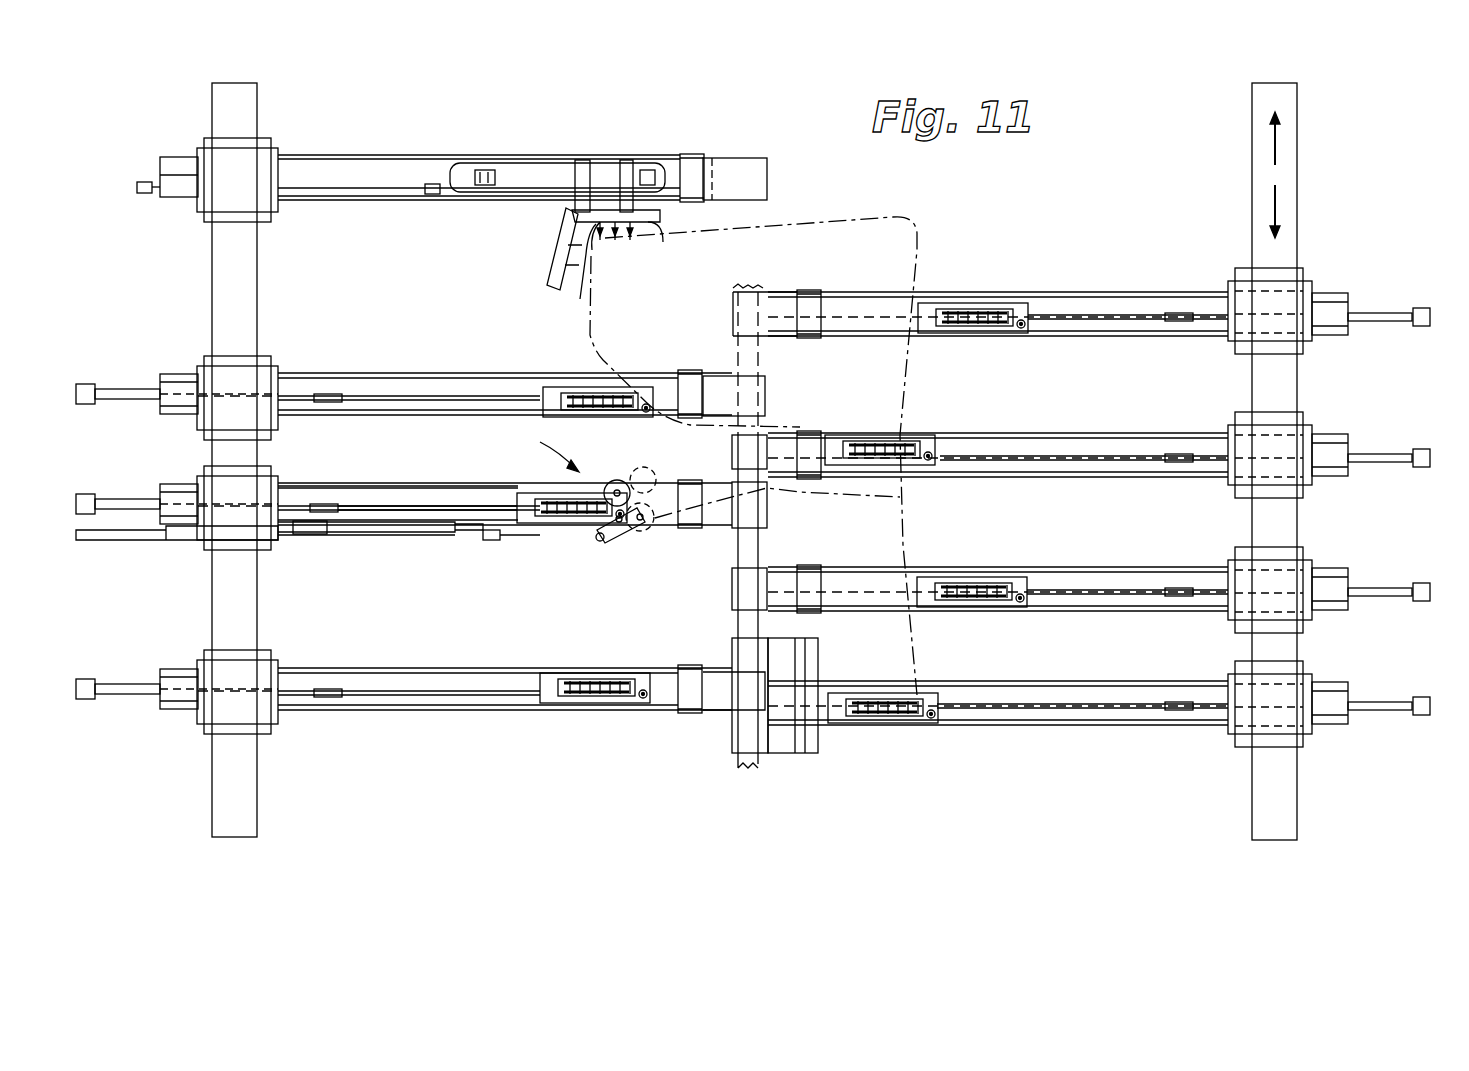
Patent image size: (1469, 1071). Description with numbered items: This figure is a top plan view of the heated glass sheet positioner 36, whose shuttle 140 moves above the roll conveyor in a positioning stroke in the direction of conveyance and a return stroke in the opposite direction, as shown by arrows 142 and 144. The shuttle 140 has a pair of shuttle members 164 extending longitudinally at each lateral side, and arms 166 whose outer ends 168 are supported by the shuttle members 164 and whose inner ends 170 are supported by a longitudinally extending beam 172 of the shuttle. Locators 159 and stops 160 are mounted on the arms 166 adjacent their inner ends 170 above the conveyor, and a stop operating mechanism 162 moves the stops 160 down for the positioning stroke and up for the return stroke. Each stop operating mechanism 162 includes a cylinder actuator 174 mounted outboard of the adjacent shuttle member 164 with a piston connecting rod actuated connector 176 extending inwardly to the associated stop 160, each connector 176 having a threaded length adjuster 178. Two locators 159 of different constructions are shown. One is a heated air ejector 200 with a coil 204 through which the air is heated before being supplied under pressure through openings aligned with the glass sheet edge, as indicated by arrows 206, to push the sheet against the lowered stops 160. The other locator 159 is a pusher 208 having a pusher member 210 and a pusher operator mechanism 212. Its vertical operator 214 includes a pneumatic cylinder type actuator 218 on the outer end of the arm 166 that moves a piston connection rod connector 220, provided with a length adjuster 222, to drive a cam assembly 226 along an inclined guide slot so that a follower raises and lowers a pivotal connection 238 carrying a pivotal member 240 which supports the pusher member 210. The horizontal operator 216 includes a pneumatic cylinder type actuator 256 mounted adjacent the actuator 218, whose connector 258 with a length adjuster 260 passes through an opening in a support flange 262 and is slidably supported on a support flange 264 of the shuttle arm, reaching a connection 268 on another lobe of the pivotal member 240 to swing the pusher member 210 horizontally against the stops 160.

The positioner 36 is at (1094, 211).
The shuttle 140 is at (1298, 168).
The arrow 142 is at (1292, 140).
The arrow 144 is at (1292, 197).
The locator 159 is at (553, 214).
The stop 160 is at (645, 415).
The stop operating mechanism 162 is at (547, 385).
The shuttle member 164 is at (212, 272).
The arm 166 is at (325, 198).
The outer end 168 is at (290, 548).
The inner end 170 is at (770, 336).
The beam 172 is at (763, 279).
The cylinder actuator 174 is at (126, 391).
The connector 176 is at (387, 375).
The length adjuster 178 is at (334, 403).
The heated air ejector 200 is at (352, 185).
The coil 204 is at (446, 165).
The arrows 206 is at (664, 237).
The pusher 208 is at (592, 546).
The pusher member 210 is at (643, 467).
The pusher operator mechanism 212 is at (440, 506).
The vertical operator 214 is at (418, 483).
The horizontal operator 216 is at (447, 545).
The pneumatic cylinder type actuator 218 is at (132, 497).
The piston connection rod connector 220 is at (378, 506).
The length adjuster 222 is at (317, 504).
The cam assembly 226 is at (608, 486).
The pivotal connection 238 is at (630, 523).
The pivotal member 240 is at (619, 522).
The pneumatic cylinder type actuator 256 is at (132, 544).
The connector 258 is at (393, 540).
The length adjuster 260 is at (315, 545).
The support flange 262 is at (448, 550).
The support flange 264 is at (548, 547).
The connection 268 is at (602, 550).